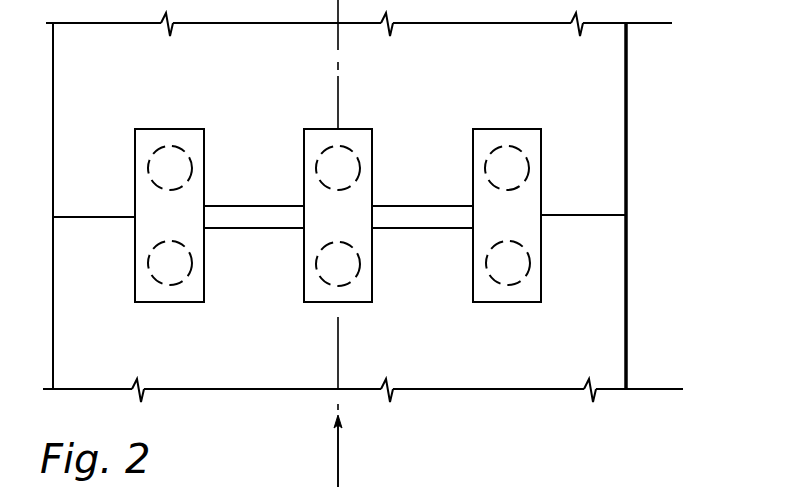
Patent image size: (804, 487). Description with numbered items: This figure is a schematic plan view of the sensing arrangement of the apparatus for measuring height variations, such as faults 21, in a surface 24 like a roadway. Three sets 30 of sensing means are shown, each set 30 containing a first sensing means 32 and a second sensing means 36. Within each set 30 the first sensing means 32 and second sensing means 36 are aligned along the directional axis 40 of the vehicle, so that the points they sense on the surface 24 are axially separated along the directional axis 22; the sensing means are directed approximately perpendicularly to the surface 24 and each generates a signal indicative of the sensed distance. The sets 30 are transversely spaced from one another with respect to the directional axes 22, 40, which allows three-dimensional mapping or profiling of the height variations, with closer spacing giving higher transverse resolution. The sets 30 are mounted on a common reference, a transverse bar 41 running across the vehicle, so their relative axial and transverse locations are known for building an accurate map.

The fault 21 is at (592, 213).
The directional axis 22 is at (338, 460).
The surface 24 is at (612, 128).
The set of sensing means 30 is at (160, 129).
The first sensing means 32 is at (150, 170).
The second sensing means 36 is at (170, 278).
The directional axis of the vehicle 40 is at (370, 456).
The transverse bar 41 is at (233, 218).